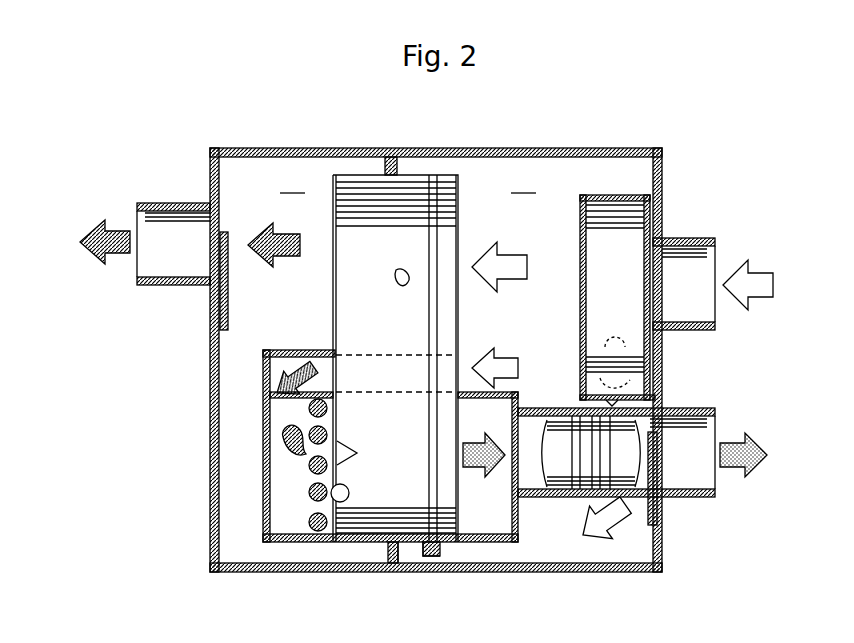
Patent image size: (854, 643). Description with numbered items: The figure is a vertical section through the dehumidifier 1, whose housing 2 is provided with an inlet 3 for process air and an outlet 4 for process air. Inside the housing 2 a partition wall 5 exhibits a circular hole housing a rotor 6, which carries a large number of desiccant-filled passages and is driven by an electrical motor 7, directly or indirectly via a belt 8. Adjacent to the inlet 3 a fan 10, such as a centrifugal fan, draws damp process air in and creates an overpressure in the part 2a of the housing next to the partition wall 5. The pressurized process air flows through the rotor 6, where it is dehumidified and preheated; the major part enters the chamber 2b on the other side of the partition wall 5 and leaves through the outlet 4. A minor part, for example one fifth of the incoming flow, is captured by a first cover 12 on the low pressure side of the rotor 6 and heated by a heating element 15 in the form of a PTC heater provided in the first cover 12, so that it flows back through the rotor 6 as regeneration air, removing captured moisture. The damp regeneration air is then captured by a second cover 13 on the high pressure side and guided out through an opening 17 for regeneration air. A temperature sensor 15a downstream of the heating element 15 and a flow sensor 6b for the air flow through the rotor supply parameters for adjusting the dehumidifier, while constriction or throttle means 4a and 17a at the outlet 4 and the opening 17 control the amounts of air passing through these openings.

The air filter device 1 is at (536, 124).
The housing 2 is at (618, 149).
The part of the housing 2a is at (523, 183).
The chamber 2b is at (292, 183).
The inlet 3 is at (688, 238).
The outlet 4 is at (175, 203).
The constriction or throttle means 4a is at (220, 320).
The partition wall 5 is at (390, 170).
The rotor 6 is at (348, 188).
The flow sensor 6b is at (395, 268).
The electrical motor 7 is at (415, 548).
The belt 8 is at (433, 180).
The fan 10 is at (645, 192).
The first cover 12 is at (297, 350).
The second cover 13 is at (518, 522).
The heating element 15 is at (303, 543).
The temperature sensor 15a is at (331, 493).
The opening 17 is at (682, 497).
The constriction or throttle means 17a is at (660, 517).